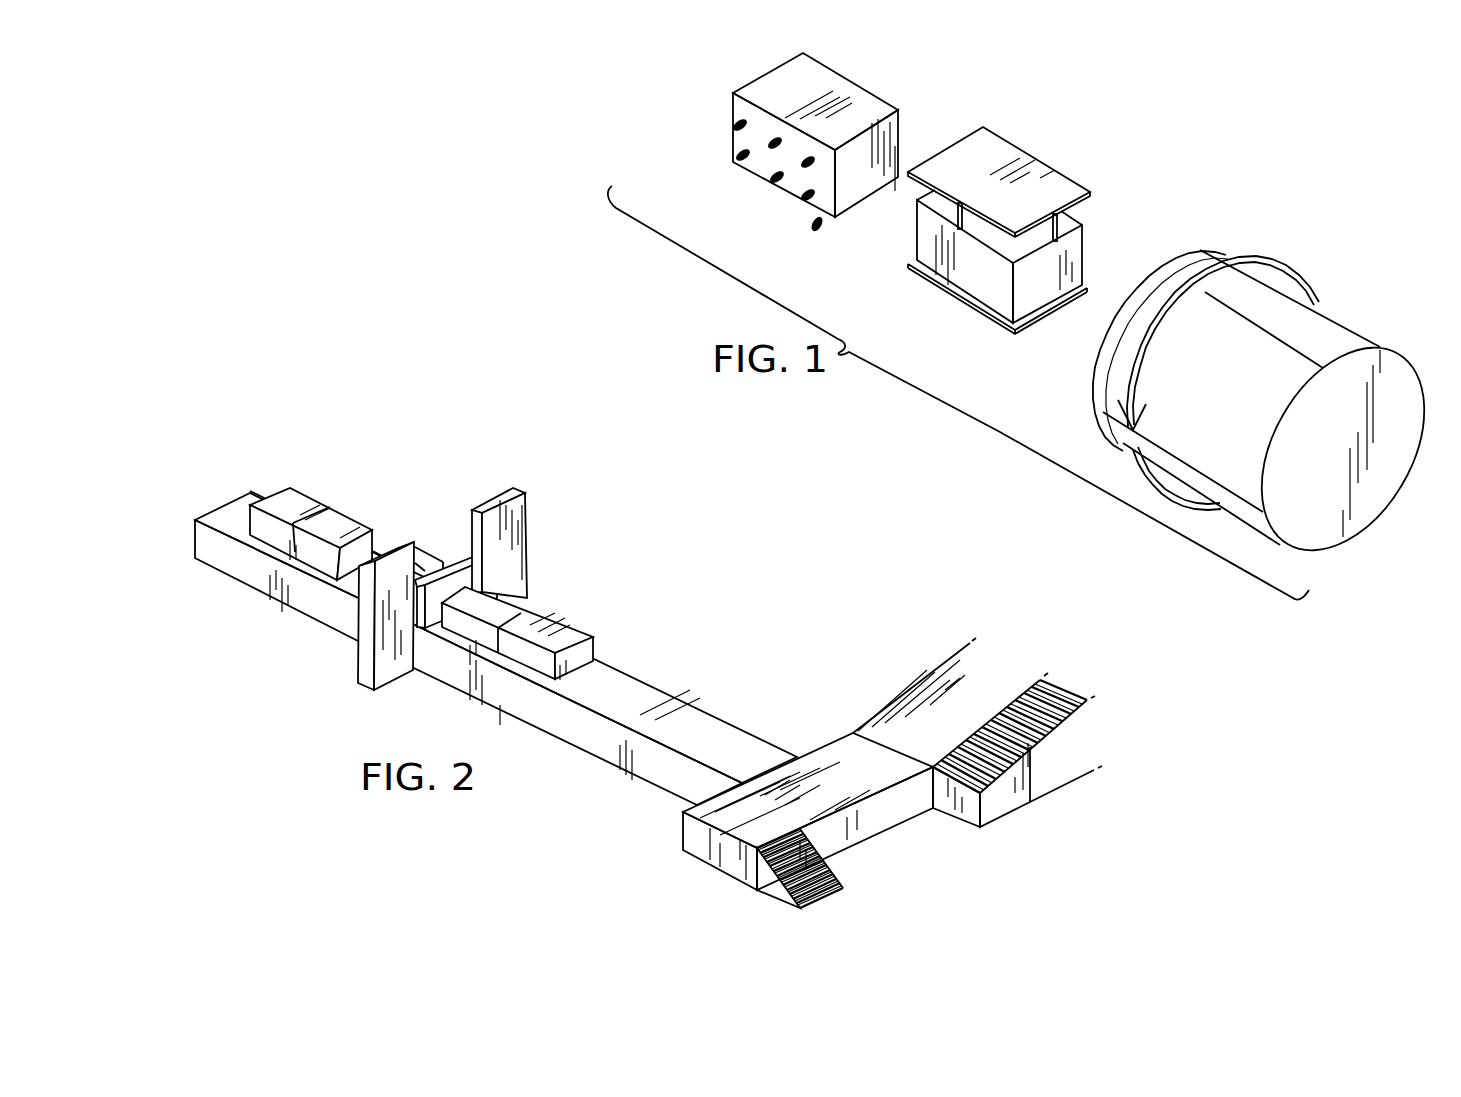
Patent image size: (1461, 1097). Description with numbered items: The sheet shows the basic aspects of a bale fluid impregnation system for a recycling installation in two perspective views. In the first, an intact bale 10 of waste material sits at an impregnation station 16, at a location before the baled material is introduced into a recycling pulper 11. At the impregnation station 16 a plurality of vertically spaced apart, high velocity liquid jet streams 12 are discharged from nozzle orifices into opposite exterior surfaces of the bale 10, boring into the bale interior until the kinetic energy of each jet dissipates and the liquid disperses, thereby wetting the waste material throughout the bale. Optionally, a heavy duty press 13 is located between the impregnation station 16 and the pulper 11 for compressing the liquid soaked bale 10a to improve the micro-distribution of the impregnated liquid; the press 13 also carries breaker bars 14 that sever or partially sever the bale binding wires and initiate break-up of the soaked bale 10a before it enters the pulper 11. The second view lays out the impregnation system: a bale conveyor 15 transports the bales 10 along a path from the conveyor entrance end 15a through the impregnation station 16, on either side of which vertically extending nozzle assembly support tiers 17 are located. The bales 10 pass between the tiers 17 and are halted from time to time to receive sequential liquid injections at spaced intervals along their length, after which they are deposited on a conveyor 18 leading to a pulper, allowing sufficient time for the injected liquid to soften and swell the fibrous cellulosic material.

In FIG. 1, the bale 10 is at (806, 94).
In FIG. 2, the bale 10 is at (300, 505).
In FIG. 1, the liquid soaked bale 10a is at (1057, 287).
In FIG. 2, the liquid soaked bale 10a is at (578, 632).
In FIG. 1, the recycling pulper 11 is at (1230, 389).
In FIG. 1, the liquid jet streams 12 is at (738, 161).
In FIG. 1, the heavy duty press 13 is at (1049, 164).
In FIG. 1, the breaker bars 14 is at (1047, 236).
In FIG. 2, the bale conveyor 15 is at (328, 612).
In FIG. 2, the conveyor entrance end 15a is at (247, 504).
In FIG. 1, the impregnation station 16 is at (814, 230).
In FIG. 2, the impregnation station 16 is at (457, 548).
In FIG. 2, the nozzle assembly support tiers 17 is at (400, 663).
In FIG. 2, the conveyor 18 is at (849, 720).